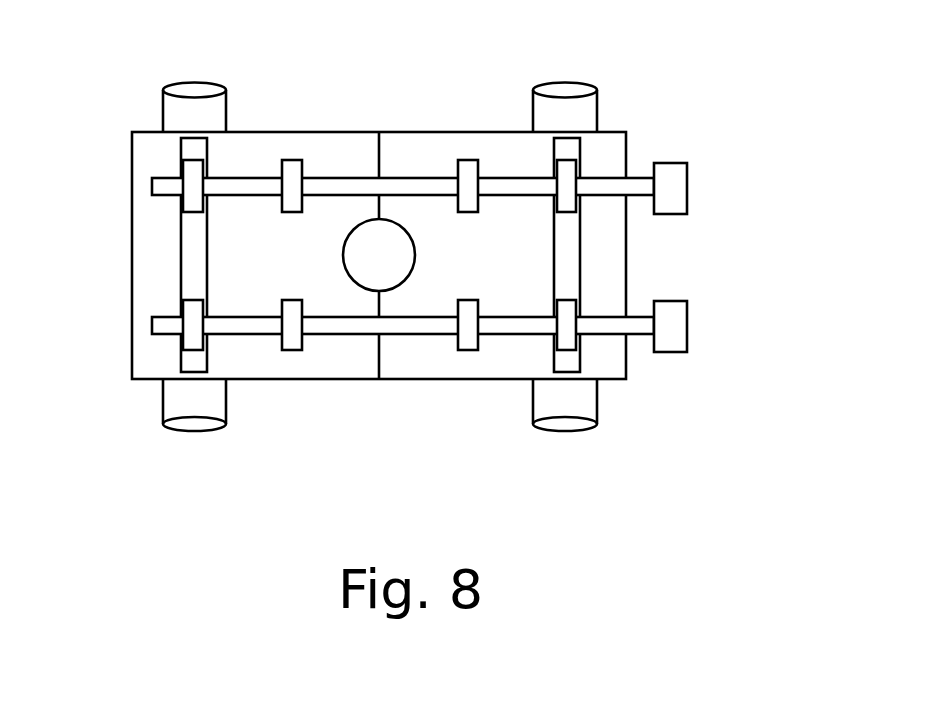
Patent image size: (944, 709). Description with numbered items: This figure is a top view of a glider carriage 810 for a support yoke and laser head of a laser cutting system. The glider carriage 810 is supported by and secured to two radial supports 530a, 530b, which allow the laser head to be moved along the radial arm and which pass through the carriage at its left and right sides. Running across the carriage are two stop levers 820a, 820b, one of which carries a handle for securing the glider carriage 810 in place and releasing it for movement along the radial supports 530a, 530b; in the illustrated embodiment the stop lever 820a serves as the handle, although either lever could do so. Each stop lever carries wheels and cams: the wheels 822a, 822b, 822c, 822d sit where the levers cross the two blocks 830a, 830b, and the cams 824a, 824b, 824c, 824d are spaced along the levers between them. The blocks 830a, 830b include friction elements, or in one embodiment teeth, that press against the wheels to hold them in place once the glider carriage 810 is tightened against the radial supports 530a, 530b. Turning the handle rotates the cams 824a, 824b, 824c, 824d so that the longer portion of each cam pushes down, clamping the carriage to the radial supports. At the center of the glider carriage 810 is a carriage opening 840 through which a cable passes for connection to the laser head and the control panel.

The glider carriage 810 is at (367, 131).
The stop lever 820a is at (687, 310).
The stop lever 820b is at (687, 175).
The wheel 822a is at (565, 350).
The wheel 822b is at (193, 350).
The wheel 822c is at (570, 160).
The wheel 822d is at (189, 160).
The cam 824a is at (470, 350).
The cam 824b is at (290, 350).
The cam 824c is at (470, 160).
The cam 824d is at (292, 160).
The block 830a is at (580, 245).
The block 830b is at (181, 260).
The carriage opening 840 is at (380, 291).
The radial support 530a is at (597, 103).
The radial support 530b is at (163, 102).